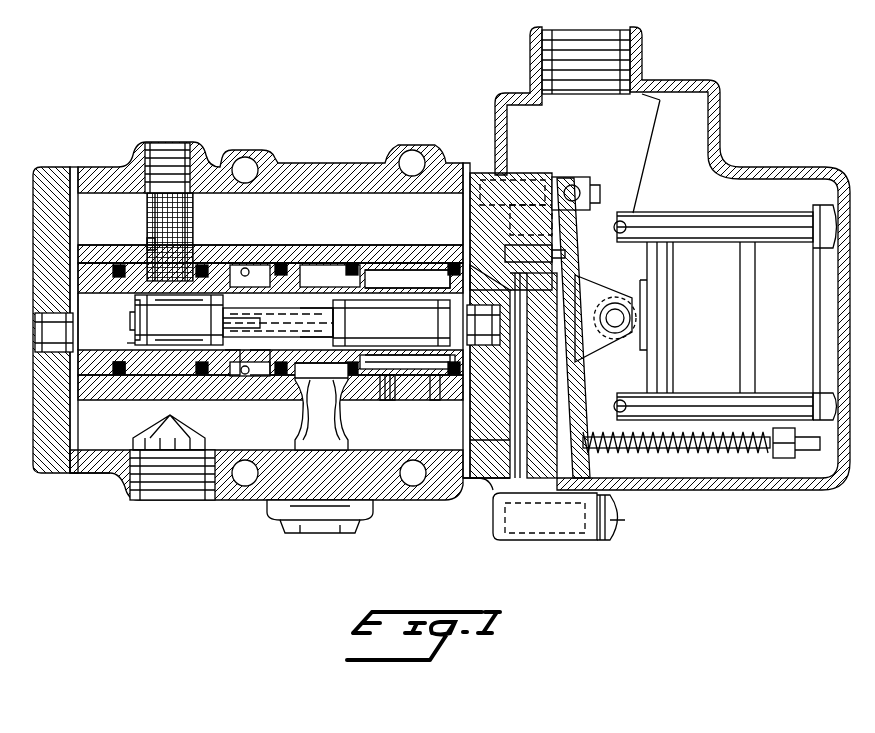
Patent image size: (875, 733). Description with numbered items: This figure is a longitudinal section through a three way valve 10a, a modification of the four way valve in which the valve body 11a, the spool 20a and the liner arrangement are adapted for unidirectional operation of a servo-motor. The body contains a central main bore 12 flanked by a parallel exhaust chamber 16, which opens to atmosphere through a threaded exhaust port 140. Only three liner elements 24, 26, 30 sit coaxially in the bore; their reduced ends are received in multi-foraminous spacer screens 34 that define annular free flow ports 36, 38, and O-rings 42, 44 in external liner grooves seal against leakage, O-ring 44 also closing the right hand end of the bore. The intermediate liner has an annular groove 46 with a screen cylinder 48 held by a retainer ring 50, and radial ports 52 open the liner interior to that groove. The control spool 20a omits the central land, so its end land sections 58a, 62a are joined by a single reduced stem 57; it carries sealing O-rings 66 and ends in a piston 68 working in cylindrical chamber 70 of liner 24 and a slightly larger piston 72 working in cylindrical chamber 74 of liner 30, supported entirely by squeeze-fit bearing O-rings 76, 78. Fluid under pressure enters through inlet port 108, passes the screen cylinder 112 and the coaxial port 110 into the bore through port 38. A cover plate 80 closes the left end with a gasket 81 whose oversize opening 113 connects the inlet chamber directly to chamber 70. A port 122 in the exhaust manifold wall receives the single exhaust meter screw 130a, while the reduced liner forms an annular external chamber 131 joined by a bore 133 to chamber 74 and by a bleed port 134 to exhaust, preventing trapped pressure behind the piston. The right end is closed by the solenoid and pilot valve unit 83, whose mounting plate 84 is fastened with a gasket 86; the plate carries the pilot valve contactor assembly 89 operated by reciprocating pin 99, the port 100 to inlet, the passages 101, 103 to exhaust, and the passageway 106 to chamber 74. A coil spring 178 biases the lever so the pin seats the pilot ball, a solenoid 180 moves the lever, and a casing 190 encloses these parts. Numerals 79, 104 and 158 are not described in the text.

The three way valve 10a is at (338, 156).
The valve body 11a is at (303, 165).
The exhaust chamber 16 is at (427, 433).
The main bore 12 is at (312, 262).
The liner element 24 is at (97, 257).
The liner element 26 is at (220, 262).
The liner element 30 is at (378, 268).
The spacer screen 34 is at (335, 262).
The annular free flow port 36 is at (195, 222).
The annular free flow port 38 is at (312, 387).
The O-ring 42 is at (120, 382).
The O-ring 44 is at (447, 265).
The annular groove 46 is at (265, 265).
The screen cylinder 48 is at (262, 400).
The retainer ring 50 is at (228, 400).
The radial port 52 is at (249, 262).
The stem 57 is at (255, 333).
The end land section 58a is at (190, 326).
The end land section 62a is at (318, 333).
The O-ring 66 is at (227, 306).
The piston 68 is at (133, 315).
The cylindrical chamber 70 is at (87, 297).
The piston 72 is at (503, 328).
The cylindrical chamber 74 is at (400, 280).
The O-ring 76 is at (135, 302).
The O-ring 78 is at (397, 317).
The plug 79 is at (78, 294).
The cover plate 80 is at (45, 432).
The gasket 81 is at (75, 478).
The solenoid and pilot valve assembly unit 83 is at (648, 497).
The mounting plate 84 is at (487, 175).
The gasket 86 is at (468, 478).
The pilot valve contactor assembly 89 is at (522, 238).
The reciprocating pin 99 is at (560, 253).
The port 100 is at (470, 230).
The passage 101 is at (517, 362).
The passage 103 is at (490, 420).
The passage 104 is at (500, 240).
The passageway 106 is at (480, 285).
The inlet port 108 is at (192, 150).
The port 110 is at (148, 240).
The screen cylinder 112 is at (185, 206).
The oversize opening 113 is at (78, 212).
The port 122 is at (350, 400).
The exhaust meter screw 130a is at (360, 528).
The annular external chamber 131 is at (385, 400).
The bore 133 is at (378, 355).
The bleed port 134 is at (435, 392).
The exhaust port 140 is at (185, 500).
The lever bracket 158 is at (581, 379).
The coil spring 178 is at (752, 450).
The solenoid 180 is at (689, 211).
The casing 190 is at (737, 141).
The control spool 20a is at (130, 346).